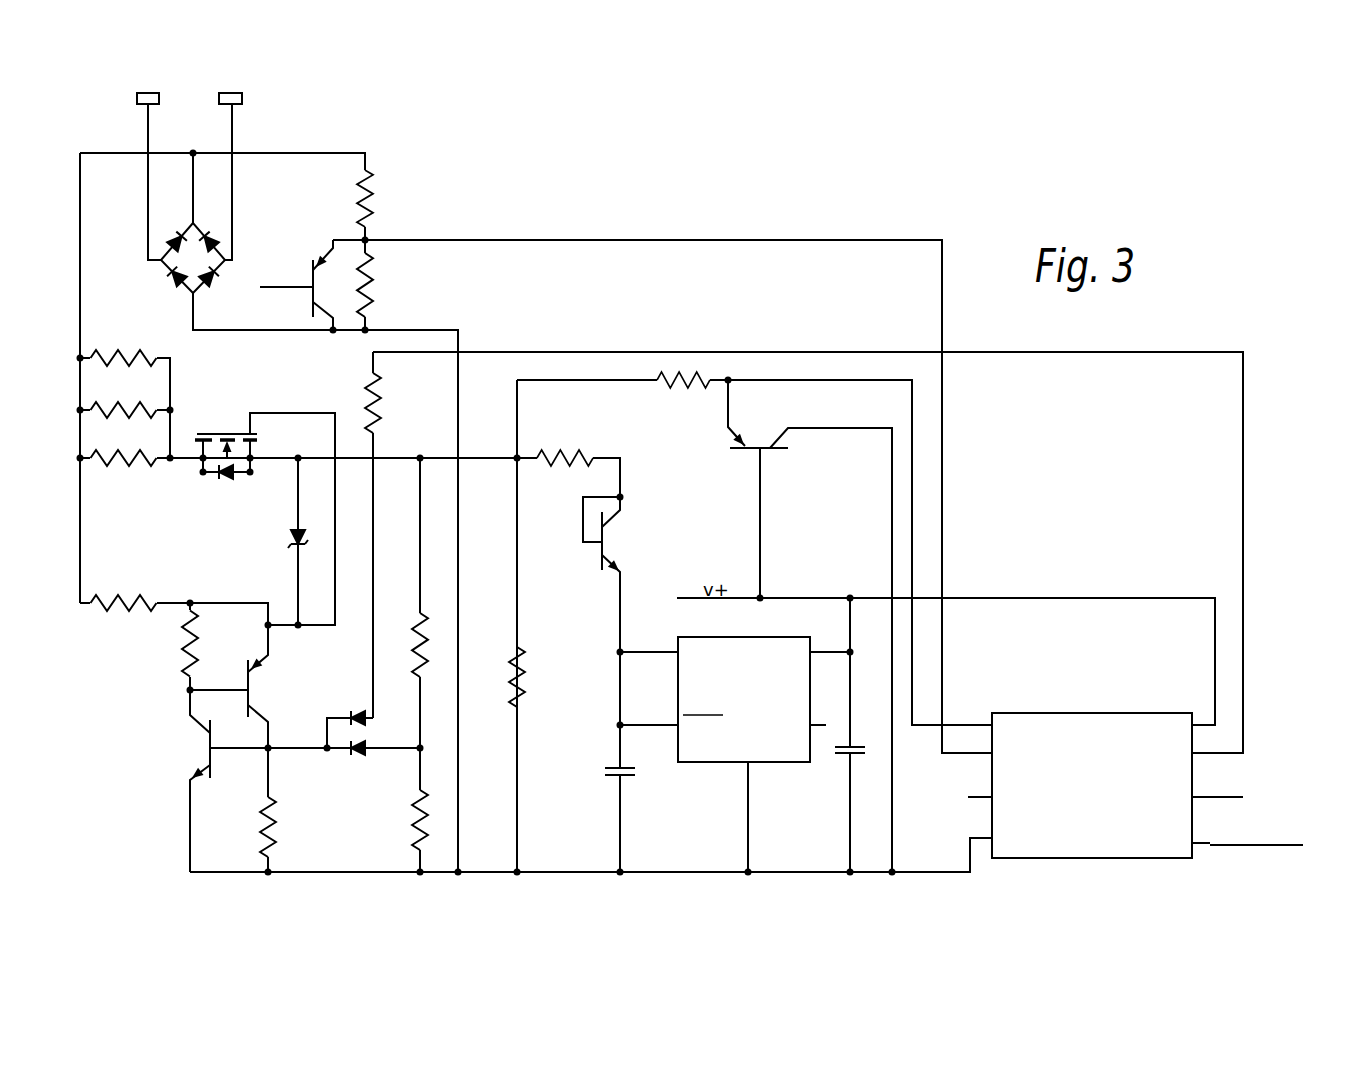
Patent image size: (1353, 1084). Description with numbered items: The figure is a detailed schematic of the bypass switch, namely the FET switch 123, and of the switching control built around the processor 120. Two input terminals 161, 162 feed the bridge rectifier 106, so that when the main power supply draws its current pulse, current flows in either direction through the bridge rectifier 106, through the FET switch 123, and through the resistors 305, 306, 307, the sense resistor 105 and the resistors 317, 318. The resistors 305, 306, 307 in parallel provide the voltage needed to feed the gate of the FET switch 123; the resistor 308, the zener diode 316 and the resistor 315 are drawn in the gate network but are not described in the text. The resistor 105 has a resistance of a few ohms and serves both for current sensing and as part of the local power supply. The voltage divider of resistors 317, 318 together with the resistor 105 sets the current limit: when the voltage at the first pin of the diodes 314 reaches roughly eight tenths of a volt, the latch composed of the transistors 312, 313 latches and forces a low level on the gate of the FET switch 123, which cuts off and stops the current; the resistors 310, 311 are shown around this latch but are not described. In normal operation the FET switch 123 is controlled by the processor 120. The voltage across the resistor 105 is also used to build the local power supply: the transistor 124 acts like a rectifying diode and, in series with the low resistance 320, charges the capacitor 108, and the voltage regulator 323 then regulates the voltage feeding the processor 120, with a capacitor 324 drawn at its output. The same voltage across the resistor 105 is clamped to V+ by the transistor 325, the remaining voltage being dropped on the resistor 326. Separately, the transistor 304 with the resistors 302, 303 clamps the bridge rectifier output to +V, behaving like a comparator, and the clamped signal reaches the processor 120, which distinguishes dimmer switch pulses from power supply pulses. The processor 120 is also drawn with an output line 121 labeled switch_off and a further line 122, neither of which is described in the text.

The terminal 161 is at (161, 78).
The terminal 162 is at (216, 78).
The bridge rectifier 106 is at (174, 274).
The resistor 302 is at (366, 188).
The resistor 303 is at (366, 282).
The transistor 304 is at (313, 268).
The resistor 305 is at (150, 356).
The resistor 306 is at (150, 408).
The resistor 307 is at (150, 456).
The resistor 308 is at (150, 601).
The FET switch 123 is at (197, 440).
The zener diode 316 is at (300, 556).
The resistor 315 is at (373, 374).
The resistor 310 is at (188, 618).
The transistor 312 is at (262, 662).
The transistor 313 is at (203, 728).
The resistor 311 is at (262, 812).
The diodes 314 is at (356, 724).
The resistor 317 is at (420, 616).
The resistor 318 is at (420, 792).
The resistor 105 is at (517, 648).
The resistor 320 is at (590, 453).
The transistor 124 is at (612, 571).
The resistor 326 is at (706, 390).
The transistor 325 is at (772, 443).
The voltage regulator 323 is at (793, 636).
The capacitor 108 is at (600, 770).
The capacitor 324 is at (862, 748).
The processor 120 is at (1063, 713).
The switch_off output line 121 is at (1212, 847).
The control line 122 is at (1243, 460).